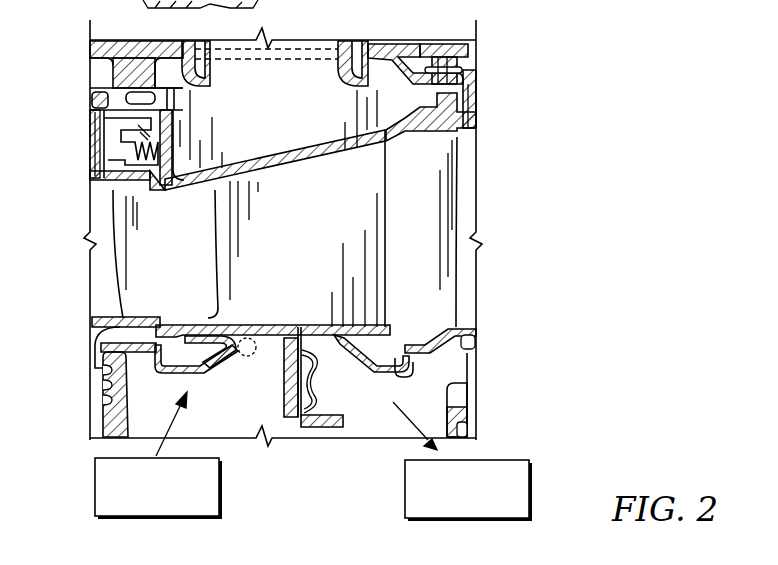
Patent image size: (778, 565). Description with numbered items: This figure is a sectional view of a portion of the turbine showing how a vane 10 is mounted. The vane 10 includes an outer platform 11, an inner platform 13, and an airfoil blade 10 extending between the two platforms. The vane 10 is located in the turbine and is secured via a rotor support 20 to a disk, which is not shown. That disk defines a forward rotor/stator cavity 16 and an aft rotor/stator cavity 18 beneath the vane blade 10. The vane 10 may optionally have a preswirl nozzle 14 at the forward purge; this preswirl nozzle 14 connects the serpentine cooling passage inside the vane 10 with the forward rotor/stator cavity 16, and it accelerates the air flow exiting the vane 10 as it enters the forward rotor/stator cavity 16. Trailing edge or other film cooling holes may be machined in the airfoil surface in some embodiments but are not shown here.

The vane 10 is at (400, 231).
The outer platform 11 is at (334, 133).
The inner platform 13 is at (330, 336).
The preswirl nozzle 14 is at (238, 351).
The forward rotor/stator cavity 16 is at (95, 471).
The aft rotor/stator cavity 18 is at (530, 486).
The rotor support 20 is at (293, 417).